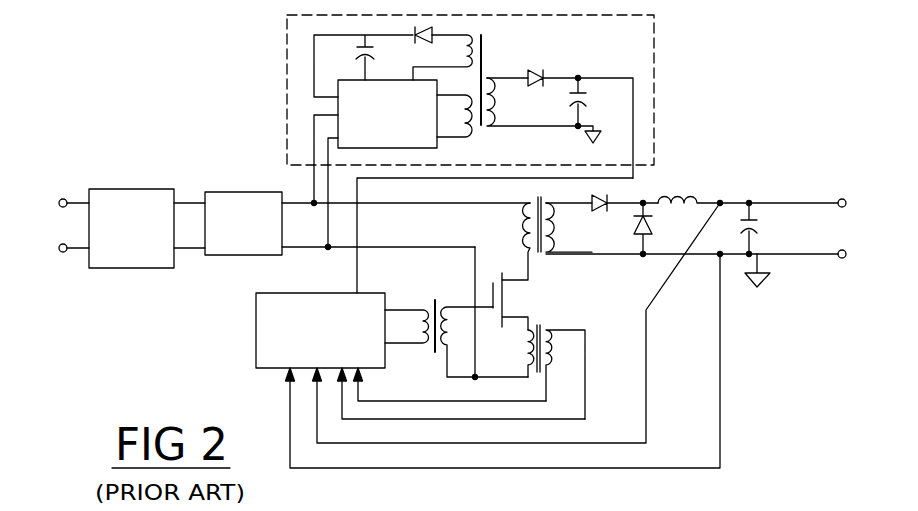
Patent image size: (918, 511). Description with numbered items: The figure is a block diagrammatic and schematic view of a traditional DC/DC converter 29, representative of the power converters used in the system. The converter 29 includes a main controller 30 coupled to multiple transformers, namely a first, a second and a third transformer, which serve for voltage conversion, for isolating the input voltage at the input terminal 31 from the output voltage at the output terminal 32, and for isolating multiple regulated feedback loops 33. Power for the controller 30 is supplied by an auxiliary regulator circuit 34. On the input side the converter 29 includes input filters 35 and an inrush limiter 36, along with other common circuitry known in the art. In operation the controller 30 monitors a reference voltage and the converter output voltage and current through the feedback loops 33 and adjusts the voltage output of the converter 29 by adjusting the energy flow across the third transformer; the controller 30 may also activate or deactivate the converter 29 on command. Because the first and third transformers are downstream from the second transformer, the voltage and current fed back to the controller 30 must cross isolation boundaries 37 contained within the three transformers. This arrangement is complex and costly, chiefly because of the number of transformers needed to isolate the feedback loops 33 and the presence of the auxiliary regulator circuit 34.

The DC/DC converter 29 is at (698, 142).
The main controller 30 is at (365, 293).
The input terminal 31 is at (60, 207).
The output terminal 32 is at (845, 207).
The regulated feedback loops 33 is at (553, 400).
The auxiliary regulator circuit 34 is at (655, 72).
The input filters 35 is at (112, 189).
The inrush limiter 36 is at (222, 192).
The isolation boundaries 37 is at (436, 301).